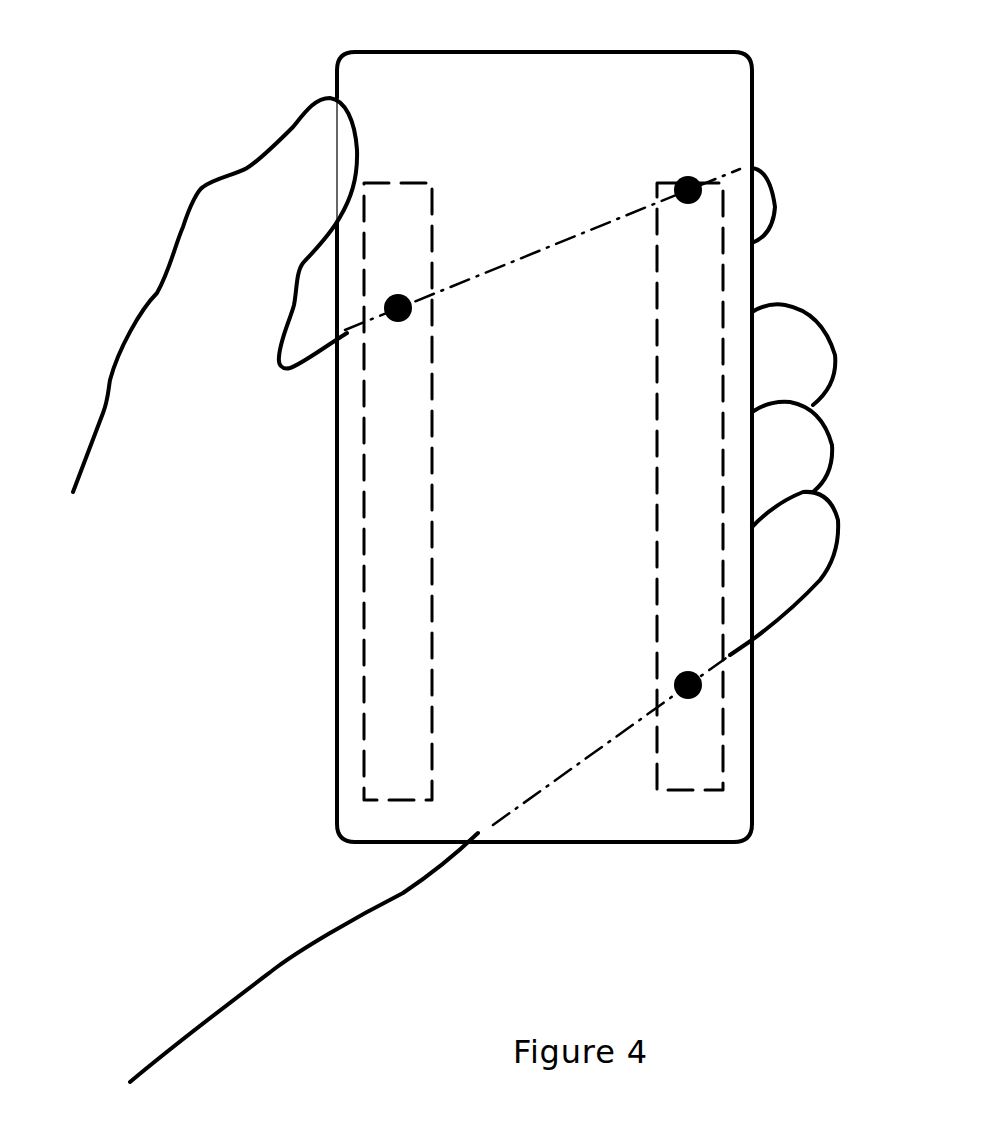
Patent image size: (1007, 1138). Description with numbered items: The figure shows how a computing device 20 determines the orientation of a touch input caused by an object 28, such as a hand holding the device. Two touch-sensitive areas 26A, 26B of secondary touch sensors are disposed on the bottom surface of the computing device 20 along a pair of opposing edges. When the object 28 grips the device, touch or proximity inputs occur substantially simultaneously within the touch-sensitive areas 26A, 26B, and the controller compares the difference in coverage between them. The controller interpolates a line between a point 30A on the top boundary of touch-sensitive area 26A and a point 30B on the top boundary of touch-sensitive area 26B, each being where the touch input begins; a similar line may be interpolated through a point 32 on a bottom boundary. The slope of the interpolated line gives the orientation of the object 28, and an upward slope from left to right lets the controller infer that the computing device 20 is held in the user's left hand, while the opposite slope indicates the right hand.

The computing device 20 is at (569, 158).
The touch-sensitive area 26A is at (414, 522).
The touch-sensitive area 26B is at (715, 521).
The object 28 is at (241, 618).
The point of top boundary 30A is at (397, 293).
The point of top boundary 30B is at (702, 172).
The point of bottom boundary 32 is at (703, 708).